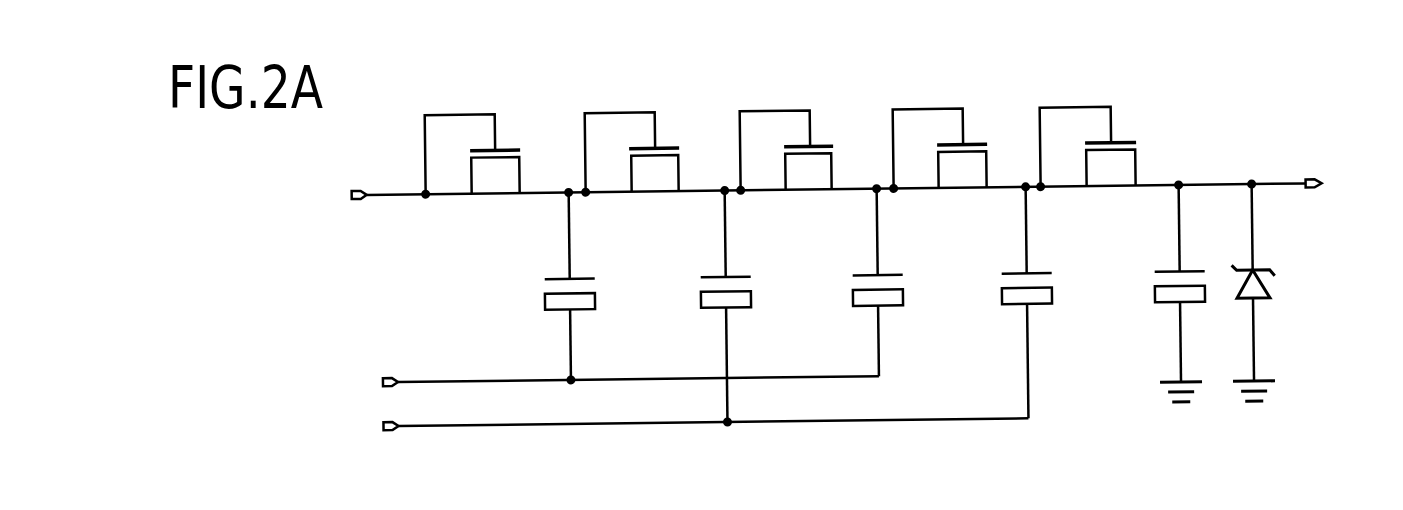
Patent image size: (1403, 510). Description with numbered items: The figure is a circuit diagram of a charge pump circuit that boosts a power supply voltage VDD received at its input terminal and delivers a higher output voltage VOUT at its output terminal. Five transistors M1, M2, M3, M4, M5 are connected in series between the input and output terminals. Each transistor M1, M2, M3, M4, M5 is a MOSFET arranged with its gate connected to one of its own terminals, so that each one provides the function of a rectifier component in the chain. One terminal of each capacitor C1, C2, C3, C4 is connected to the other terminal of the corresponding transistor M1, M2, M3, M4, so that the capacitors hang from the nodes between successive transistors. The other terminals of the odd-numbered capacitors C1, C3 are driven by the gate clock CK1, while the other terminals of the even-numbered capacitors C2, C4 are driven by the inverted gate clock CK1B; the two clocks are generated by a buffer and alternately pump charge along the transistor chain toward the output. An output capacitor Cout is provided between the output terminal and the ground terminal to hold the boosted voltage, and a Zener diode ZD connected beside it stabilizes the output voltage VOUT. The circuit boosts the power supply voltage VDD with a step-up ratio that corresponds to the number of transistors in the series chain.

The transistor M1 is at (500, 191).
The transistor M2 is at (660, 191).
The transistor M3 is at (815, 191).
The transistor M4 is at (968, 191).
The transistor M5 is at (1116, 191).
The capacitor C1 is at (541, 284).
The capacitor C2 is at (698, 285).
The capacitor C3 is at (848, 283).
The capacitor C4 is at (995, 284).
The output capacitor Cout is at (1150, 284).
The Zener diode ZD is at (1277, 297).
The power supply voltage VDD is at (331, 196).
The output voltage VOUT is at (1348, 185).
The gate clock CK1 is at (605, 380).
The inverted gate clock CK1B is at (672, 423).